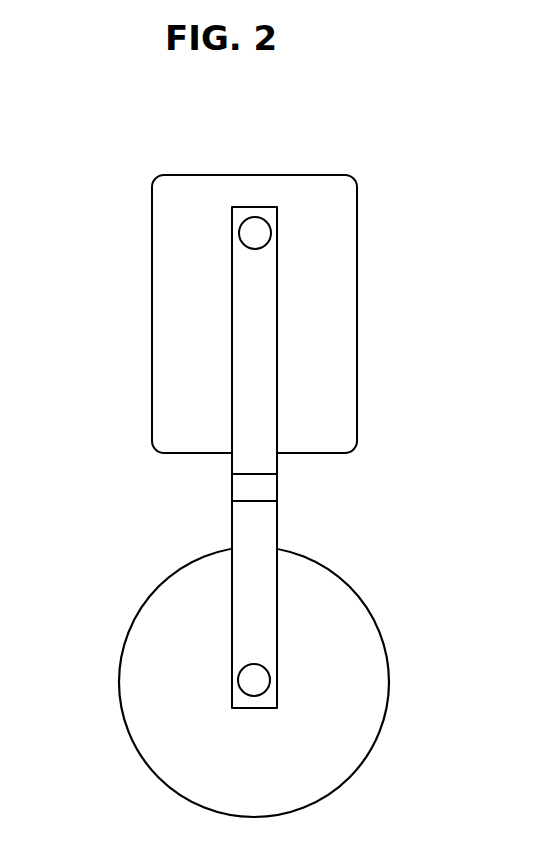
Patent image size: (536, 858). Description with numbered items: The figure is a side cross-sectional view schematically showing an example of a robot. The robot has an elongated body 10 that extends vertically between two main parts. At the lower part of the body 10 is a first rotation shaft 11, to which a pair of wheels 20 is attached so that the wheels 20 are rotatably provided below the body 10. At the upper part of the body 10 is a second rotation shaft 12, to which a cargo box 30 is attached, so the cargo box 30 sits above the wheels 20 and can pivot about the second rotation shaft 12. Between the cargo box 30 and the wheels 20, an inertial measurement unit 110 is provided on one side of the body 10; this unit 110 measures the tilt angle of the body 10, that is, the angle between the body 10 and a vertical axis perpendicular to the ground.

The body 10 is at (232, 375).
The first rotation shaft 11 is at (263, 682).
The second rotation shaft 12 is at (252, 227).
The wheels 20 is at (141, 623).
The cargo box 30 is at (348, 231).
The inertial measurement unit (IMU) 110 is at (264, 490).